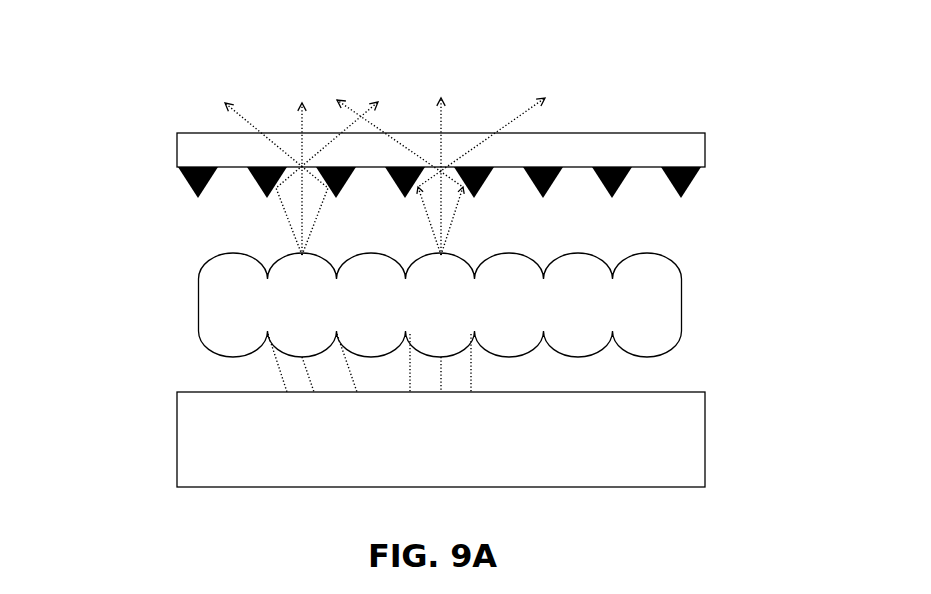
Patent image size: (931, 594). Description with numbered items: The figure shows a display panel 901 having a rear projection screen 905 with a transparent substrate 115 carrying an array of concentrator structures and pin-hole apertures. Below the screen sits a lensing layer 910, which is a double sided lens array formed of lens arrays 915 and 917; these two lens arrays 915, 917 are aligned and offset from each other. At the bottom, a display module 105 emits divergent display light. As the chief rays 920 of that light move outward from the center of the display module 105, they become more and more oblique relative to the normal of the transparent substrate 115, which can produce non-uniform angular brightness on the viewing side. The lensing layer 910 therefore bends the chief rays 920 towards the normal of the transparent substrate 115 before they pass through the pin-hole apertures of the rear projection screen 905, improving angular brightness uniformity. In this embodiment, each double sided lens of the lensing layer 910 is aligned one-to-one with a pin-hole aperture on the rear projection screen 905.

The display panel 901 is at (144, 70).
The rear projection screen 905 is at (719, 123).
The transparent substrate 115 is at (441, 150).
The lensing layer 910 is at (440, 305).
The lens array 917 is at (198, 244).
The lens array 915 is at (188, 361).
The display module 105 is at (441, 439).
The chief rays 920 is at (306, 124).